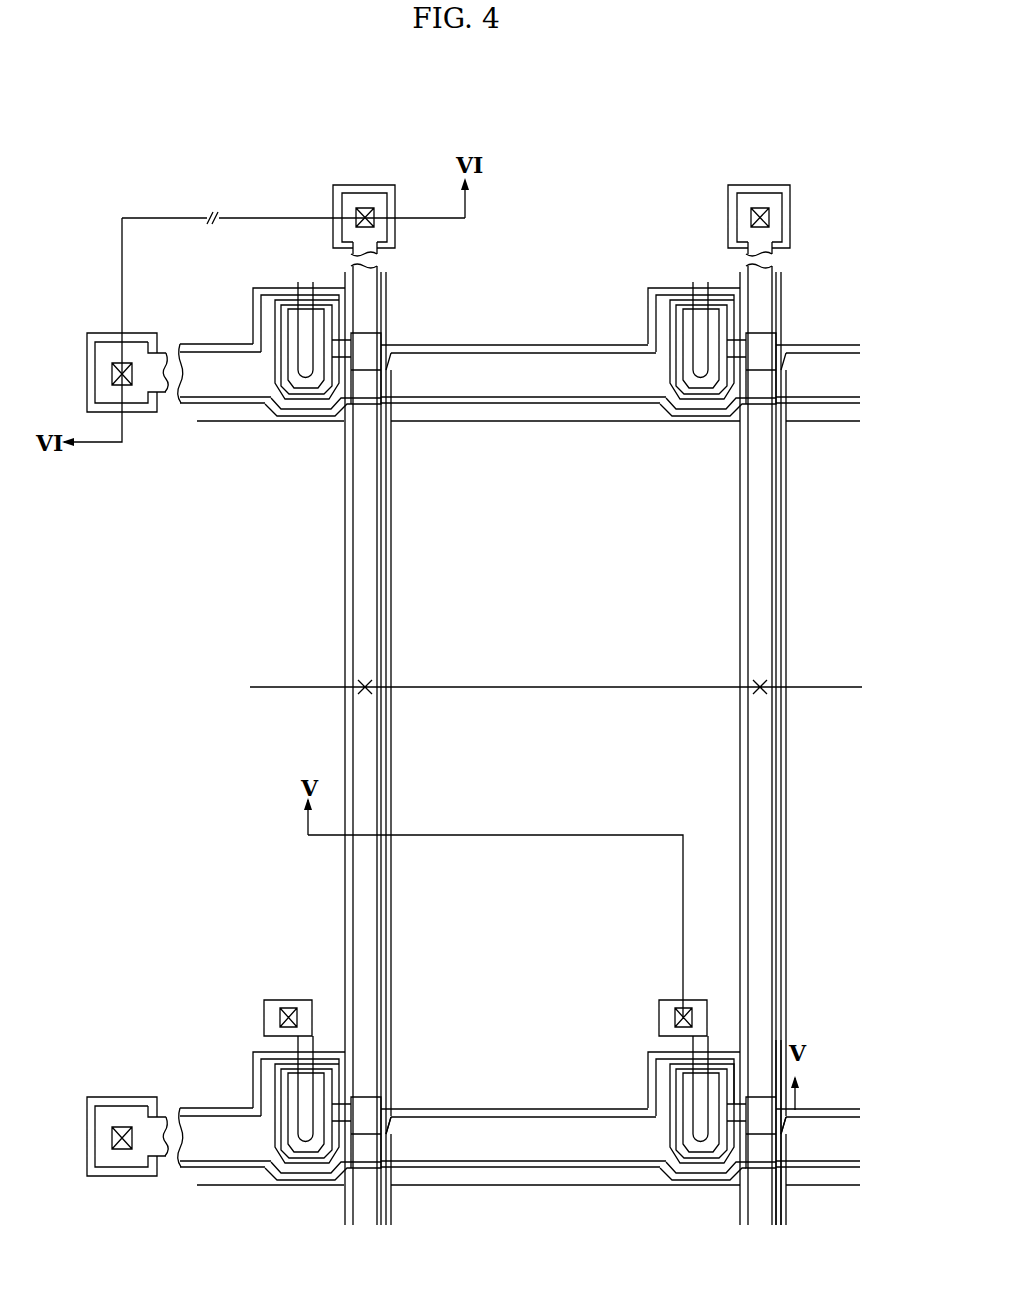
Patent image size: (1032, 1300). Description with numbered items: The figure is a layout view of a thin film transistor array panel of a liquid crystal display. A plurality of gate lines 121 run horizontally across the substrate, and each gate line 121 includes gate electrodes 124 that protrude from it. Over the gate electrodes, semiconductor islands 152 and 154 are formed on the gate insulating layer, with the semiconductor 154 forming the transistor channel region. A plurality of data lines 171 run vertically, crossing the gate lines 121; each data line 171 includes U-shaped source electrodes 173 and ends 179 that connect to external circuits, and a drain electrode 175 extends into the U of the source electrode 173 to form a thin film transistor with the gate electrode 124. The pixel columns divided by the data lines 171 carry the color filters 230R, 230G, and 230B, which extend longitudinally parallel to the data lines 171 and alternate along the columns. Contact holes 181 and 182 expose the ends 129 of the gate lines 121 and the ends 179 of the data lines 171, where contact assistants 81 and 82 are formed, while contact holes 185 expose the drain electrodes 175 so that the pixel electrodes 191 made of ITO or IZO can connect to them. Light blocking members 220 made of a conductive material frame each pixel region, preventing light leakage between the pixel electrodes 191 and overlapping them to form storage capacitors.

The contact assistant 81 is at (145, 412).
The contact hole 181 is at (127, 362).
The end of gate line 129 is at (152, 410).
The end of data line 179 is at (382, 186).
The contact assistant 82 is at (401, 203).
The contact hole 182 is at (363, 206).
The light blocking member 220 is at (503, 345).
The pixel electrode 191 is at (389, 786).
The data line 171 is at (784, 790).
The red color filter 230R is at (286, 671).
The green color filter 230G is at (556, 676).
The blue color filter 230B is at (838, 671).
The gate line 121 is at (528, 1160).
The gate electrode 124 is at (678, 1180).
The semiconductor island 154 is at (670, 1142).
The semiconductor island 152 is at (780, 1143).
The source electrode 173 is at (710, 1167).
The drain electrode 175 is at (708, 1080).
The contact hole 185 is at (674, 1018).